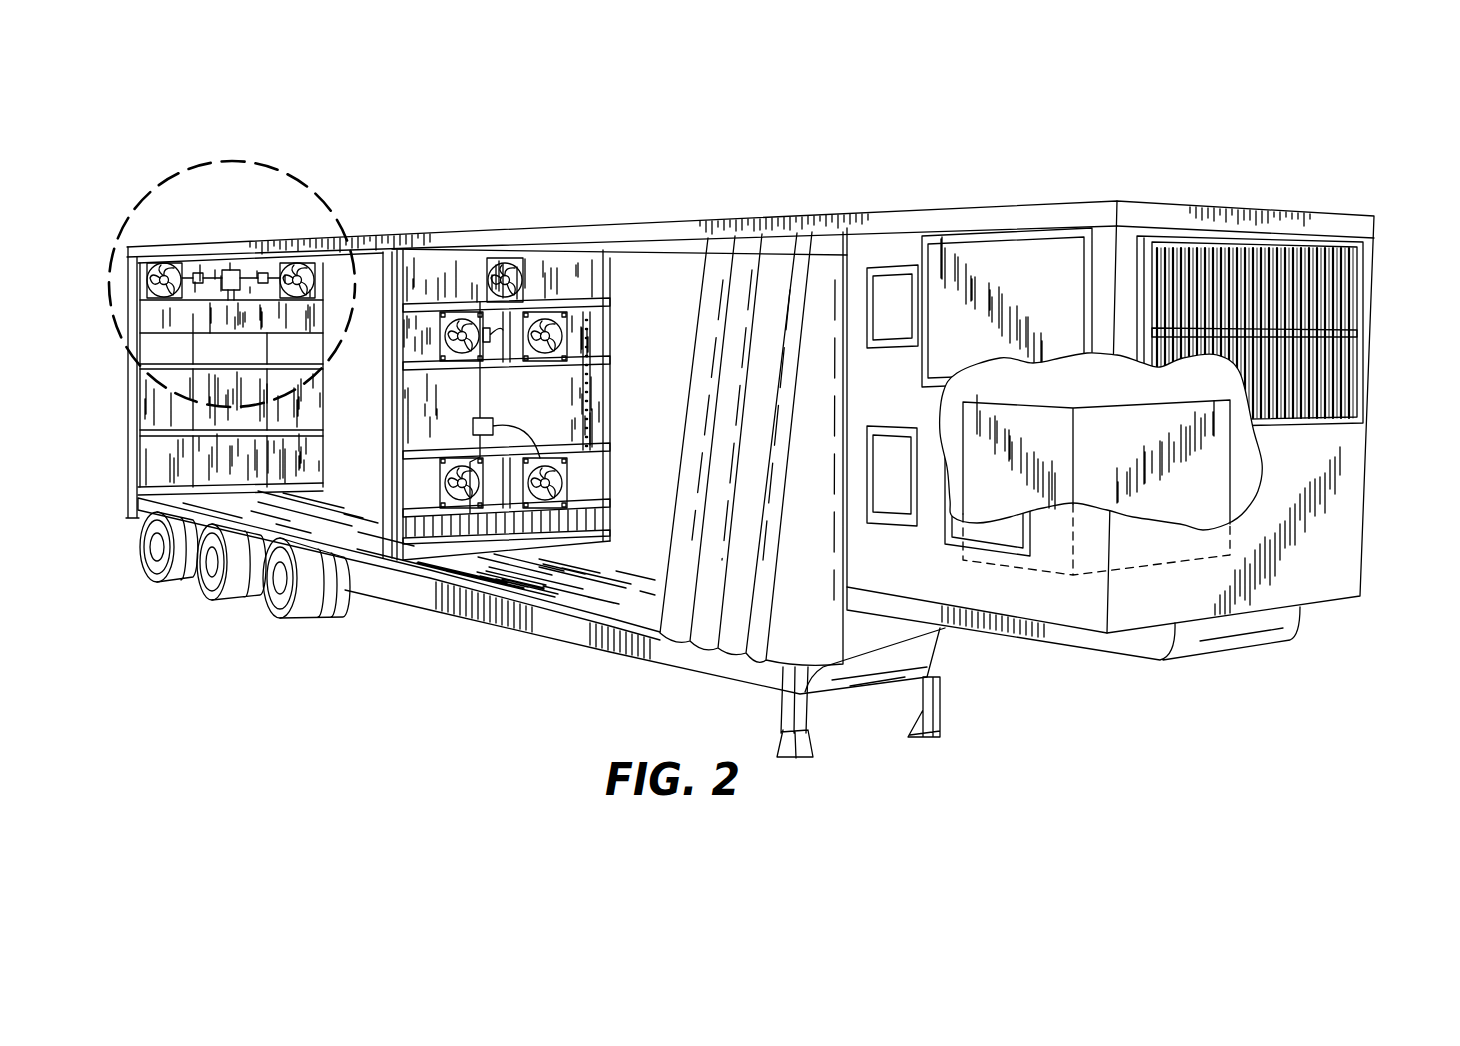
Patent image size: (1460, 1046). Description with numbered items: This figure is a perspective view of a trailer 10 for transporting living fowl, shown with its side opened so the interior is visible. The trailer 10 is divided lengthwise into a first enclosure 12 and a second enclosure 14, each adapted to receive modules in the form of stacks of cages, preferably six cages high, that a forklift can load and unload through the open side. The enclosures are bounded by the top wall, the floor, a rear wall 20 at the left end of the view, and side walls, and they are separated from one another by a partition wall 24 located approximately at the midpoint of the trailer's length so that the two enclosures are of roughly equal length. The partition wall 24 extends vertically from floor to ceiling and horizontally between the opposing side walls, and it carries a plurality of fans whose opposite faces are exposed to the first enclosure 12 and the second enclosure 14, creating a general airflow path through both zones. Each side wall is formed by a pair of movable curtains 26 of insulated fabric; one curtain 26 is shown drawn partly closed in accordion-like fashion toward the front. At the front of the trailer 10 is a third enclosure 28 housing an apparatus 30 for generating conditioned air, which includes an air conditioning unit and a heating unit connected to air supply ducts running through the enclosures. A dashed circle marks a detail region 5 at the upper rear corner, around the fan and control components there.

The detail region shown in FIG. 5 is at (318, 192).
The trailer 10 is at (1406, 262).
The first enclosure 12 is at (364, 254).
The second enclosure 14 is at (638, 248).
The rear wall 20 is at (156, 463).
The partition wall 24 is at (388, 536).
The movable curtains 26 is at (762, 634).
The third enclosure 28 is at (1367, 413).
The apparatus for generating conditioned air 30 is at (1203, 469).